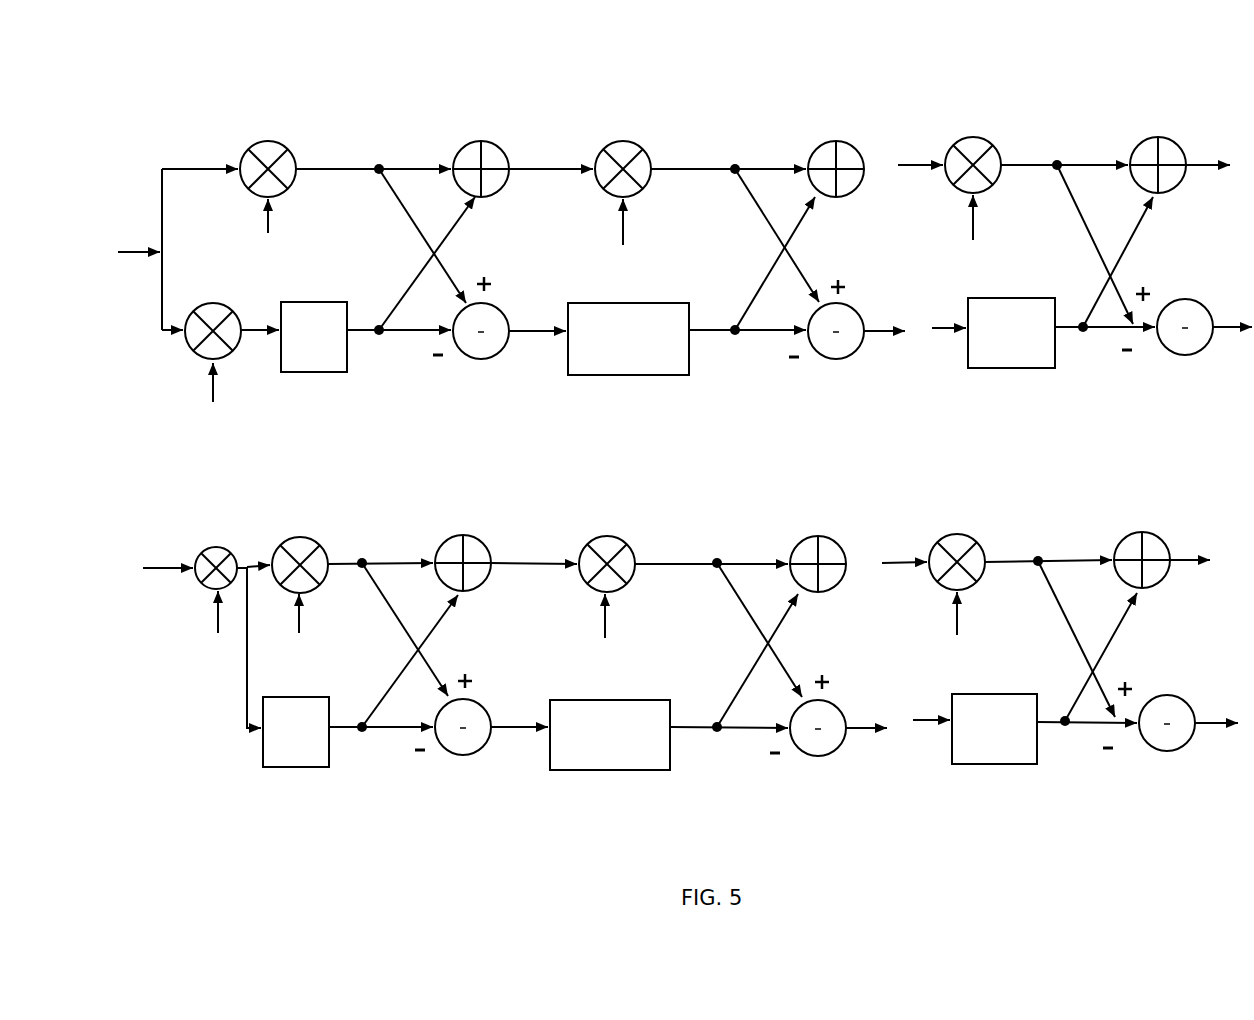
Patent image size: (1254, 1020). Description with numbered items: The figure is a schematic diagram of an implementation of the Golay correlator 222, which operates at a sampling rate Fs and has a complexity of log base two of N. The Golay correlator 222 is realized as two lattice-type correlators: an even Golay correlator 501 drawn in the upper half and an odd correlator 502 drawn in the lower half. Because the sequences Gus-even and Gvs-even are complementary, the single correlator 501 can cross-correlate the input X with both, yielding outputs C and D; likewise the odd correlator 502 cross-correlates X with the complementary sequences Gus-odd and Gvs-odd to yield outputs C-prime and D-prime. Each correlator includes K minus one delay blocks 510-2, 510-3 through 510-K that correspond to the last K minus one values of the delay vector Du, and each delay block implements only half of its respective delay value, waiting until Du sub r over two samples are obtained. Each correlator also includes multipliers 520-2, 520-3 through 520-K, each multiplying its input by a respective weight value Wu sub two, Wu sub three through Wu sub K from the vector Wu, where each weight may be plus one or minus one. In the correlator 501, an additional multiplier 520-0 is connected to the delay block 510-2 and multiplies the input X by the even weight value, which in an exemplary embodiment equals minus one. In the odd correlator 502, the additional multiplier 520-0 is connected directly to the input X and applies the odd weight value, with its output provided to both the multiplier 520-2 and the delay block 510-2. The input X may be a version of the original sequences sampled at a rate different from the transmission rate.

The Golay correlator 222 is at (858, 75).
The Golay correlator 501 is at (138, 299).
The odd correlator 502 is at (188, 708).
The additional multiplier 520-0 is at (215, 306).
The multiplier 520-2 is at (258, 142).
The multiplier 520-3 is at (612, 143).
The multiplier 520-K is at (962, 139).
The delay block 510-2 is at (323, 302).
The delay block 510-3 is at (663, 303).
The delay block 510-K is at (968, 358).